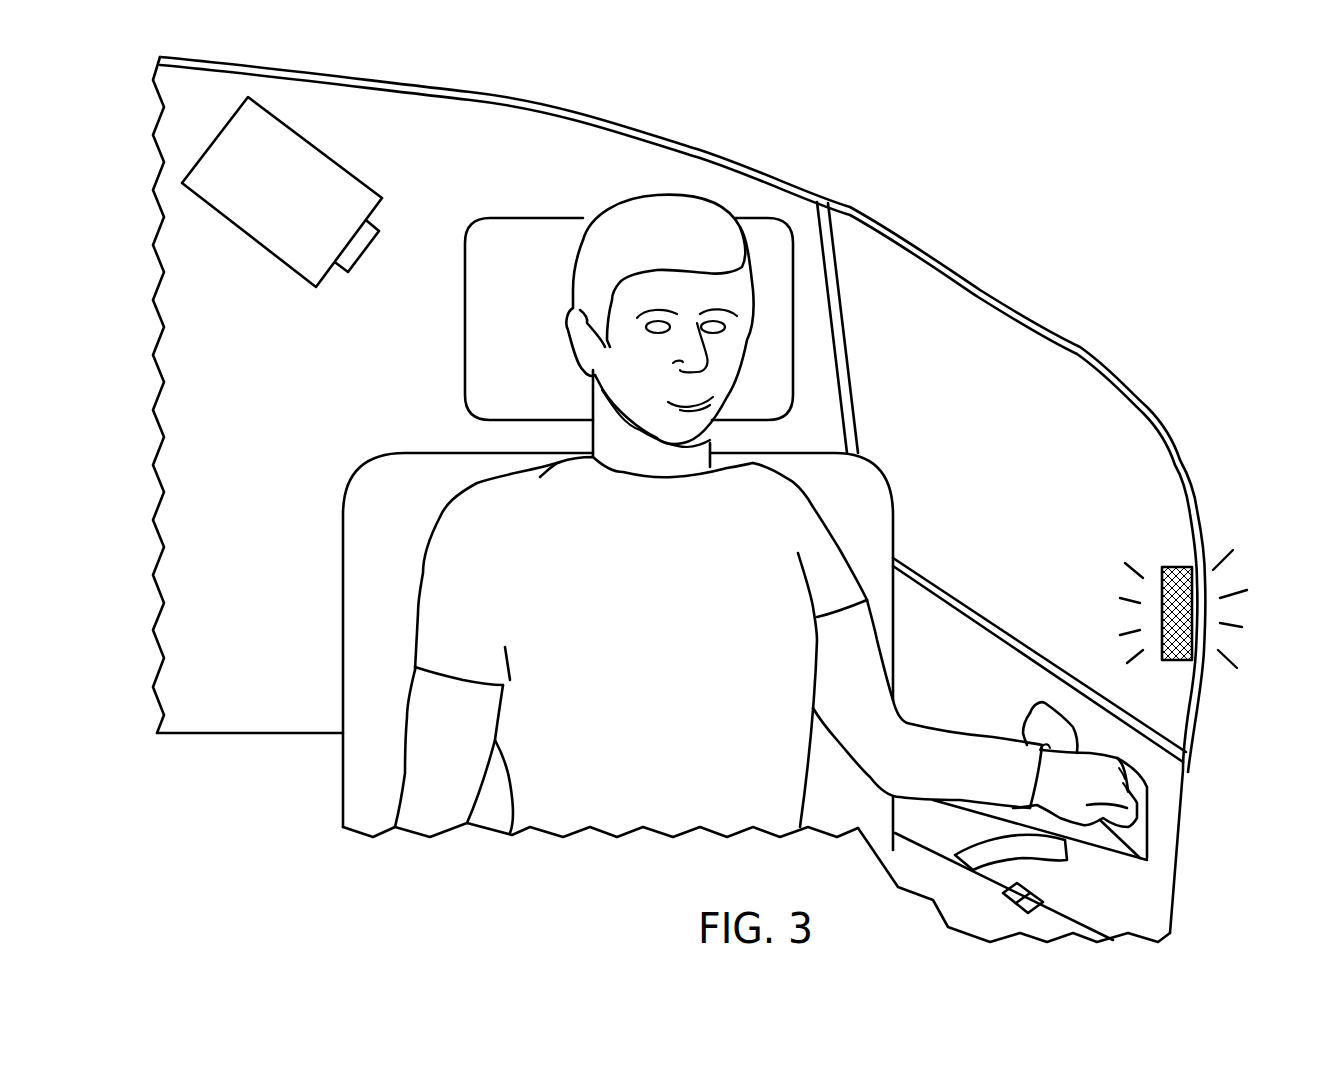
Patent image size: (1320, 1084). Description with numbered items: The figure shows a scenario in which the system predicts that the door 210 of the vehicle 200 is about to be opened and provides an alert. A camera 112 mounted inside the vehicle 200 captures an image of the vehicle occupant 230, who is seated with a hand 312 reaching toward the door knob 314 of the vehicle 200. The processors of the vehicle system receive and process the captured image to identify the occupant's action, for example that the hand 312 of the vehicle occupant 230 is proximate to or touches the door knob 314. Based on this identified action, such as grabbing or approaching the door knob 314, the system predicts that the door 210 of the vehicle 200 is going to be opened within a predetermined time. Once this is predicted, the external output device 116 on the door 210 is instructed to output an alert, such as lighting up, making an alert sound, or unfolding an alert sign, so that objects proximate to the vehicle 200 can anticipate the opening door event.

The camera 112 is at (362, 181).
The external output device 116 is at (1180, 570).
The vehicle 200 is at (1098, 296).
The door 210 is at (1022, 720).
The vehicle occupant 230 is at (740, 464).
The hand 312 is at (1027, 745).
The door knob 314 is at (1075, 728).